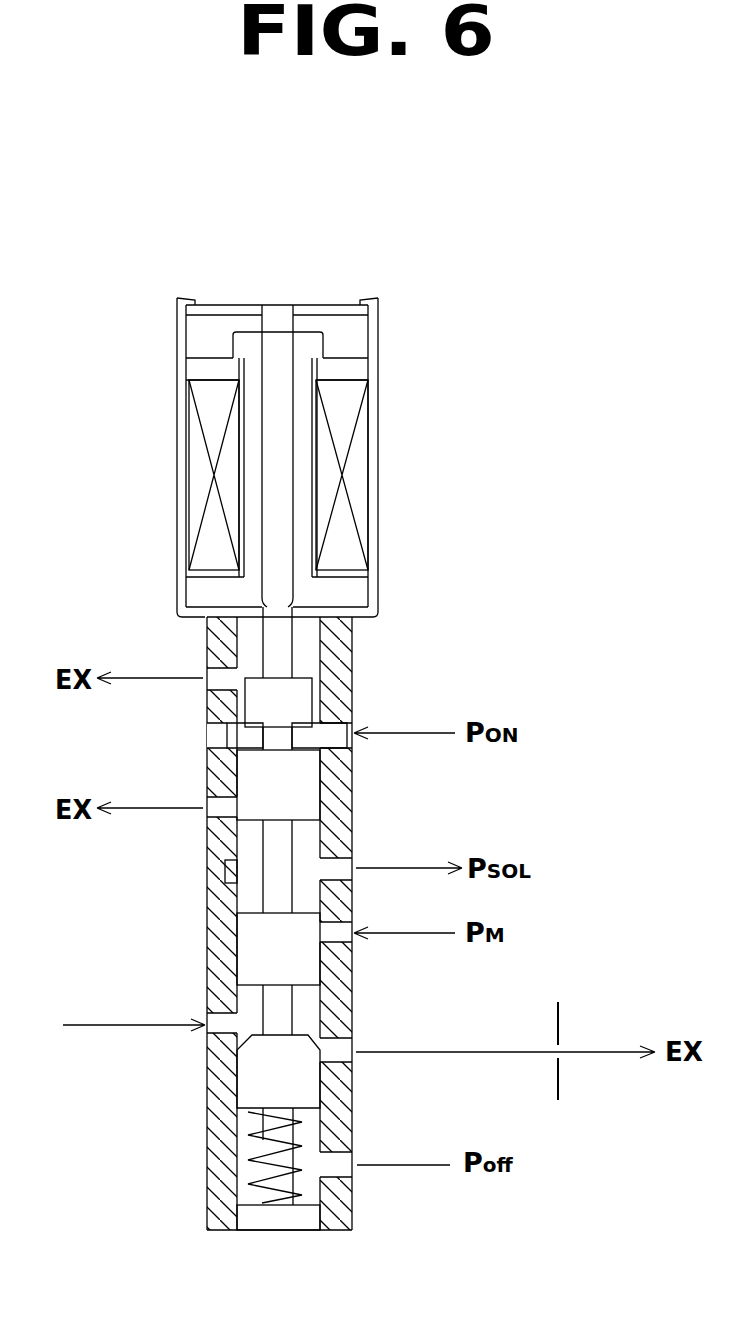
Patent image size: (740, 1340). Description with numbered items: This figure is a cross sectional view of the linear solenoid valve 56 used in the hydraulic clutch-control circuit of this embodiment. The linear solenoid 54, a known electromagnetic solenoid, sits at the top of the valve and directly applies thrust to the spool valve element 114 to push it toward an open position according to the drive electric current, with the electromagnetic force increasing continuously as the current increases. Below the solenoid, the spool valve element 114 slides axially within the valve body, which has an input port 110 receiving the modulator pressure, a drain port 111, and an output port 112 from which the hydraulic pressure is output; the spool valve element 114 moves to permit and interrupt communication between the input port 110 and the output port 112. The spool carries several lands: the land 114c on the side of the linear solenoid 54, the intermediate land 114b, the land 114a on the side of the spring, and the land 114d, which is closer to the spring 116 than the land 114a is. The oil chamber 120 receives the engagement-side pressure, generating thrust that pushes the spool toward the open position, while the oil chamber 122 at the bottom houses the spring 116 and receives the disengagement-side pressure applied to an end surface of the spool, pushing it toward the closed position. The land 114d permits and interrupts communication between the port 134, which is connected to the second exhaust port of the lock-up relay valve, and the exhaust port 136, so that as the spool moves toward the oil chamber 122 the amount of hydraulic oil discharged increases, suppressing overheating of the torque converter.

The linear solenoid 54 is at (358, 468).
The linear solenoid valve 56 is at (556, 582).
The input port 110 is at (352, 937).
The drain port 111 is at (208, 800).
The output port 112 is at (350, 866).
The spool valve element 114 is at (272, 872).
The land 114a is at (245, 956).
The intermediate land 114b is at (300, 776).
The land 114c is at (297, 710).
The land 114d is at (255, 1086).
The spring 116 is at (256, 1168).
The oil chamber 120 is at (228, 732).
The oil chamber 122 is at (245, 1195).
The port 134 is at (212, 1018).
The exhaust port 136 is at (352, 1050).